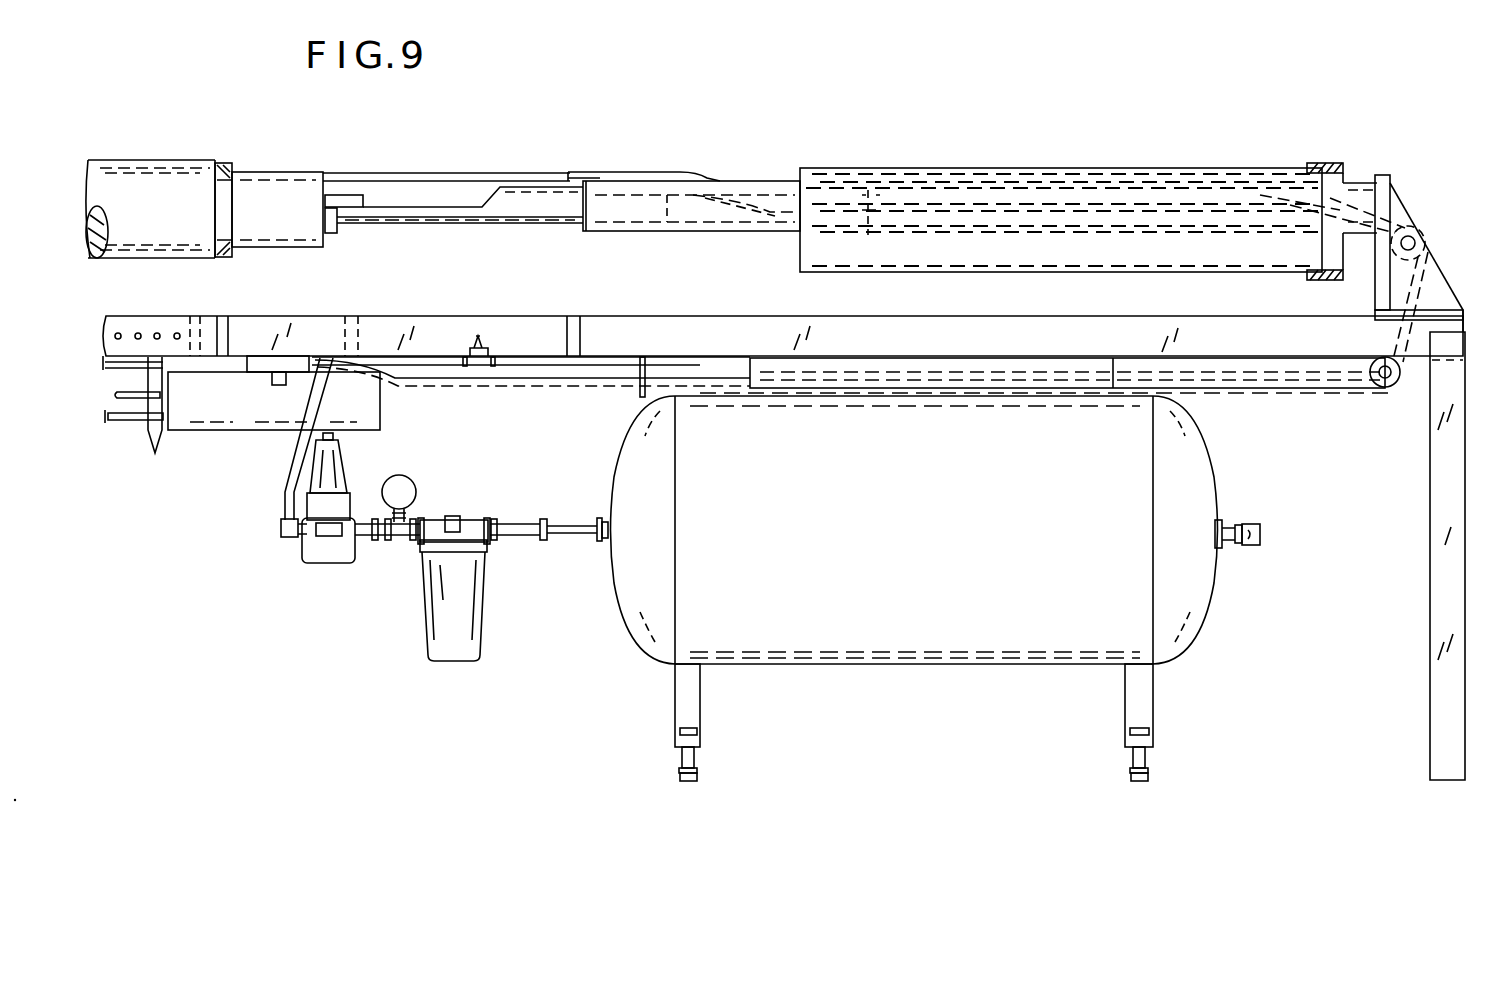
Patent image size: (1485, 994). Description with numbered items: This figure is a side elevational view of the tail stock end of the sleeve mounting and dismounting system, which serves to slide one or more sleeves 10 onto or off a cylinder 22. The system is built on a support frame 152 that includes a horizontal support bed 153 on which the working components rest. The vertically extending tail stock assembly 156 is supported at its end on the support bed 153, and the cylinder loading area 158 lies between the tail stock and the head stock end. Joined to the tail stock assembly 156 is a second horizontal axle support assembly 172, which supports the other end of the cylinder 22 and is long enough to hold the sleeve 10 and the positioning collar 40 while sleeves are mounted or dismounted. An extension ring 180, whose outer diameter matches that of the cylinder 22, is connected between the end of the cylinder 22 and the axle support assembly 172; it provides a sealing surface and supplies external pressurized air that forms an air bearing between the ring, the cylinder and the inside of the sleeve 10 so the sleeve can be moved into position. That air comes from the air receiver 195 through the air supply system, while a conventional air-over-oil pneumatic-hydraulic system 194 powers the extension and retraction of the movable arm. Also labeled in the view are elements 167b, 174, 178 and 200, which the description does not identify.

The sleeve 10 is at (1013, 158).
The cylinder 22 is at (131, 168).
The positioning collar 40 is at (1331, 162).
The support frame 152 is at (1430, 632).
The horizontal support bed 153 is at (631, 314).
The tail stock assembly 156 is at (748, 180).
The cylinder loading area 158 is at (169, 102).
The tube section 167b is at (628, 170).
The second horizontal axle support assembly 172 is at (452, 226).
The collar 174 is at (287, 174).
The stop block 178 is at (330, 236).
The extension ring 180 is at (229, 165).
The air-over-oil pneumatic-hydraulic system 194 is at (485, 690).
The air receiver 195 is at (936, 588).
The control valve 200 is at (303, 397).